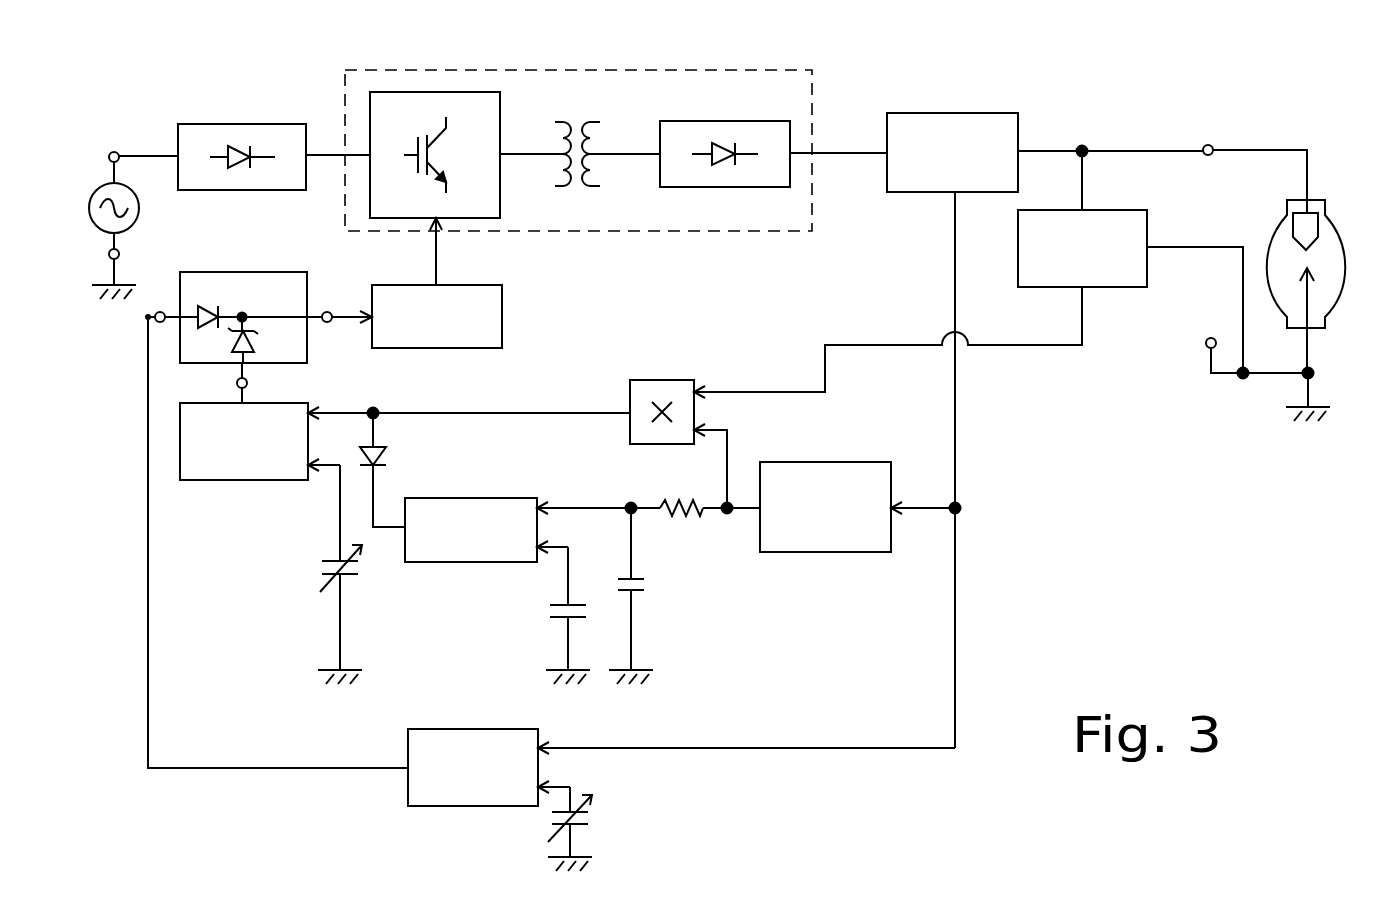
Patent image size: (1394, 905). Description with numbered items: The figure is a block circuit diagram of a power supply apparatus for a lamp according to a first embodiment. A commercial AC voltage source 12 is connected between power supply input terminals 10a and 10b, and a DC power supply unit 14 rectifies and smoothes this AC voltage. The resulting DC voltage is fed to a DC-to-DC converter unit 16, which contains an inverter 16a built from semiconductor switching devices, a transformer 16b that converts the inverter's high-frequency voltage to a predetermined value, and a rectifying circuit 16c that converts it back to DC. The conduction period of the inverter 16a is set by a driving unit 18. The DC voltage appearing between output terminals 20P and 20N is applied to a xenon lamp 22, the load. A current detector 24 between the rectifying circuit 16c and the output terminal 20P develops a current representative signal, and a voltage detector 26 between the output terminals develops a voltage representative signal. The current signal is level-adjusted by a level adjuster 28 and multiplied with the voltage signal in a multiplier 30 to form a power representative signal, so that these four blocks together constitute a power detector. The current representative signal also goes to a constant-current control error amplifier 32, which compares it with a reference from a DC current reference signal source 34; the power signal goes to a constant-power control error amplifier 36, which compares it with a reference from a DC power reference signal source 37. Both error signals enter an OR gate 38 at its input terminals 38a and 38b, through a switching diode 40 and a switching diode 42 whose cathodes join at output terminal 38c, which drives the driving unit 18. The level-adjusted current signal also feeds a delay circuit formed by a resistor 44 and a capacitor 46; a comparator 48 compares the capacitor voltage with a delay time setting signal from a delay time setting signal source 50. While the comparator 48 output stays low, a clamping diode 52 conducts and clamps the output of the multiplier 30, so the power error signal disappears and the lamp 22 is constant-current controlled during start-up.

The commercial AC voltage source 12 is at (102, 190).
The power supply input terminal 10a is at (118, 150).
The power supply input terminal 10b is at (120, 252).
The DC power supply unit 14 is at (208, 135).
The DC-to-DC converter unit 16 is at (522, 83).
The inverter 16a is at (480, 203).
The transformer 16b is at (580, 182).
The rectifying circuit 16c is at (740, 163).
The driving unit 18 is at (492, 327).
The output terminal 20P is at (1210, 143).
The output terminal 20N is at (1207, 350).
The xenon lamp 22 is at (1333, 262).
The current detector 24 is at (913, 120).
The voltage detector 26 is at (1100, 215).
The level adjuster 28 is at (877, 490).
The multiplier 30 is at (655, 388).
The constant-current control error amplifier 32 is at (420, 738).
The DC current reference signal source 34 is at (587, 817).
The constant-power control error amplifier 36 is at (296, 470).
The DC power reference signal source 37 is at (357, 567).
The OR gate 38 is at (246, 290).
The input terminal 38a is at (147, 320).
The input terminal 38b is at (250, 381).
The output terminal 38c is at (330, 310).
The switching diode 40 is at (211, 302).
The switching diode 42 is at (252, 341).
The resistor 44 is at (703, 510).
The capacitor 46 is at (642, 588).
The comparator 48 is at (482, 503).
The delay time setting signal source 50 is at (553, 610).
The clamping diode 52 is at (385, 447).